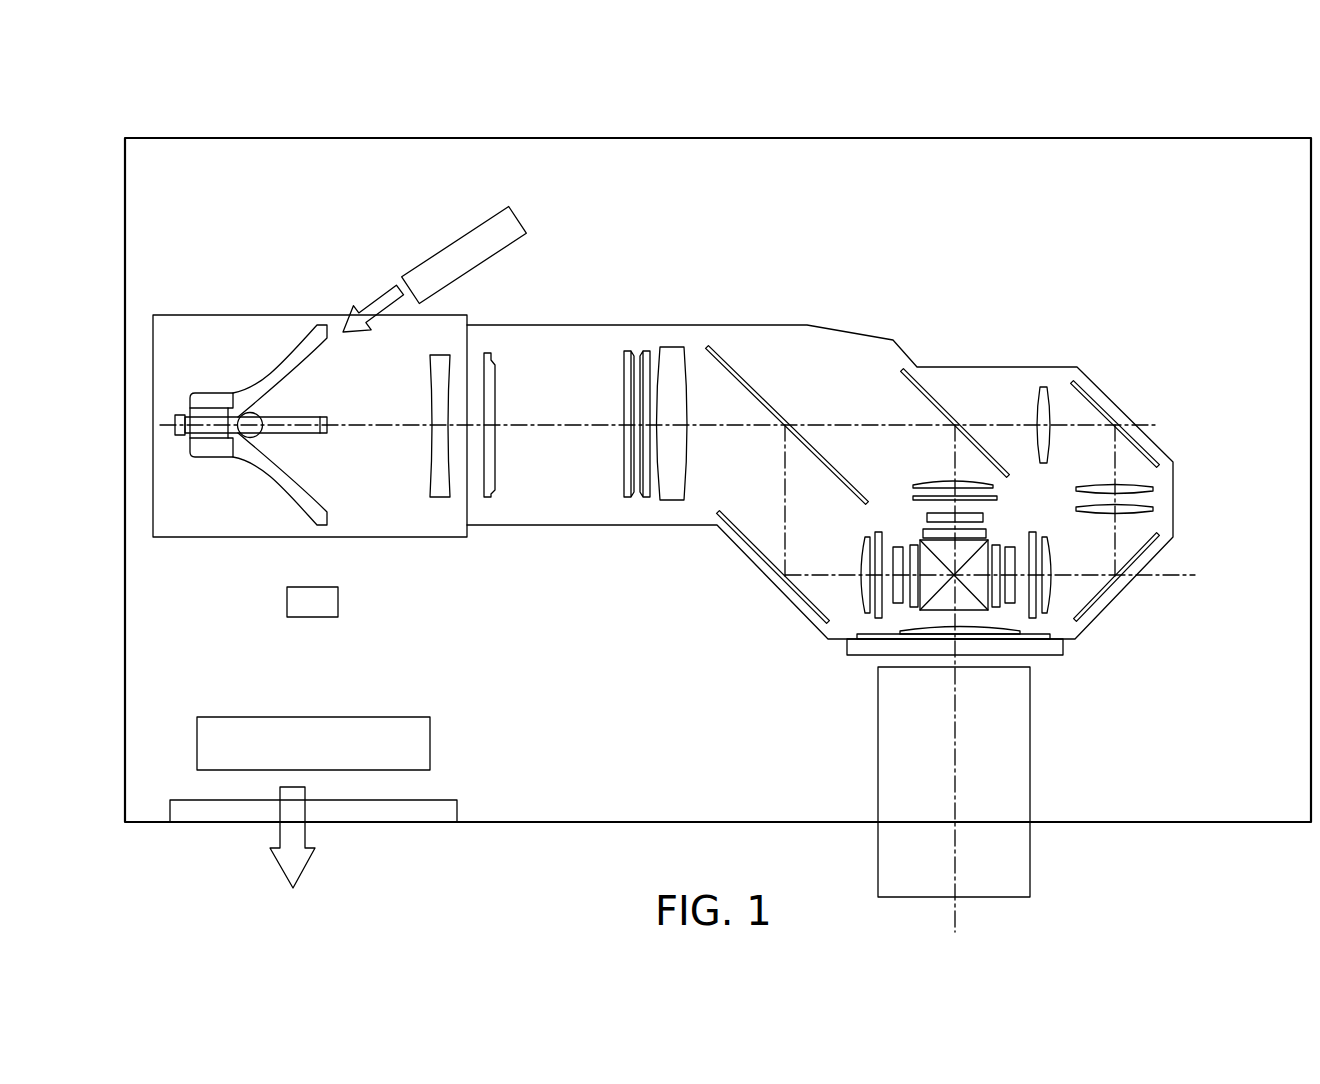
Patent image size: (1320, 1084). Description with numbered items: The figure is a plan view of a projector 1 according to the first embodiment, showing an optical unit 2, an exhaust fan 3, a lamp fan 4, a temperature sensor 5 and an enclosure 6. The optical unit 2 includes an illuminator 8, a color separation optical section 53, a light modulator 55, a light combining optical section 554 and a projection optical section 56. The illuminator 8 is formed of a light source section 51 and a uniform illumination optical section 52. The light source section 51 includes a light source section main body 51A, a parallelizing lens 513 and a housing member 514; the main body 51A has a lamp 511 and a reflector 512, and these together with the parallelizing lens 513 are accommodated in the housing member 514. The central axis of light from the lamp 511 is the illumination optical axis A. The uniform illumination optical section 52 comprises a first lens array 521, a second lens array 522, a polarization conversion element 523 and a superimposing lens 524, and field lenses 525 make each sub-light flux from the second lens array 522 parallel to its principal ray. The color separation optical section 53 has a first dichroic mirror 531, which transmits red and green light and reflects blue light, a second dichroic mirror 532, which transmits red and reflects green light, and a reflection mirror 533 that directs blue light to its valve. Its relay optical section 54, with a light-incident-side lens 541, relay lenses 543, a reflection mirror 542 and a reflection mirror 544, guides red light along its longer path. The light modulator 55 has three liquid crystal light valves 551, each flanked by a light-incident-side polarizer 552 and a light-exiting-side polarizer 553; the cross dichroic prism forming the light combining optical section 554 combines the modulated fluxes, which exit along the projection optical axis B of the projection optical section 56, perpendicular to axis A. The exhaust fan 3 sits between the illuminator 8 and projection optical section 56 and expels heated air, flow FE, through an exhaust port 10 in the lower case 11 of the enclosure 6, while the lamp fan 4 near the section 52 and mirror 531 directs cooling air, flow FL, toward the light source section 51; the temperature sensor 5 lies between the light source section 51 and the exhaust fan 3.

The projector 1 is at (888, 130).
The optical unit 2 is at (803, 238).
The exhaust fan 3 is at (374, 720).
The lamp fan 4 is at (490, 225).
The temperature sensor 5 is at (290, 605).
The enclosure 6 is at (1085, 138).
The lower case 11 is at (718, 460).
The illuminator 8 is at (522, 260).
The exhaust port 10 is at (418, 823).
The light source section 51 is at (410, 191).
The light source section main body 51A is at (345, 232).
The lamp 511 is at (303, 412).
The reflector 512 is at (296, 342).
The parallelizing lens 513 is at (430, 365).
The housing member 514 is at (416, 537).
The uniform illumination optical section 52 is at (632, 292).
The first lens array 521 is at (497, 384).
The second lens array 522 is at (626, 350).
The polarization conversion element 523 is at (646, 350).
The superimposing lens 524 is at (679, 401).
The field lens 525 is at (941, 483).
The color separation optical section 53 is at (851, 360).
The first dichroic mirror 531 is at (739, 377).
The second dichroic mirror 532 is at (928, 391).
The reflection mirror 533 is at (743, 534).
The relay optical section 54 is at (1140, 388).
The light-incident-side lens 541 is at (1043, 387).
The reflection mirror 542 is at (1160, 453).
The relay lens 543 is at (1153, 489).
The reflection mirror 544 is at (1139, 557).
The light modulator 55 is at (1067, 463).
The liquid crystal light valve 551 is at (925, 517).
The light-incident-side polarizer 552 is at (912, 495).
The light-exiting-side polarizer 553 is at (987, 530).
The light combining optical section 554 is at (966, 612).
The projection optical section 56 is at (1033, 840).
The illumination optical axis A is at (557, 428).
The projection optical axis B is at (958, 918).
The flow of the cooling air FL is at (393, 305).
The flow of heated air FE is at (283, 833).